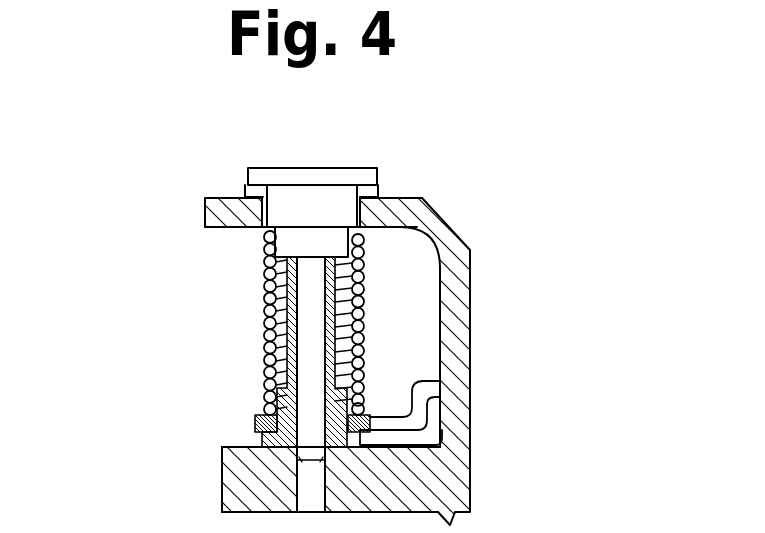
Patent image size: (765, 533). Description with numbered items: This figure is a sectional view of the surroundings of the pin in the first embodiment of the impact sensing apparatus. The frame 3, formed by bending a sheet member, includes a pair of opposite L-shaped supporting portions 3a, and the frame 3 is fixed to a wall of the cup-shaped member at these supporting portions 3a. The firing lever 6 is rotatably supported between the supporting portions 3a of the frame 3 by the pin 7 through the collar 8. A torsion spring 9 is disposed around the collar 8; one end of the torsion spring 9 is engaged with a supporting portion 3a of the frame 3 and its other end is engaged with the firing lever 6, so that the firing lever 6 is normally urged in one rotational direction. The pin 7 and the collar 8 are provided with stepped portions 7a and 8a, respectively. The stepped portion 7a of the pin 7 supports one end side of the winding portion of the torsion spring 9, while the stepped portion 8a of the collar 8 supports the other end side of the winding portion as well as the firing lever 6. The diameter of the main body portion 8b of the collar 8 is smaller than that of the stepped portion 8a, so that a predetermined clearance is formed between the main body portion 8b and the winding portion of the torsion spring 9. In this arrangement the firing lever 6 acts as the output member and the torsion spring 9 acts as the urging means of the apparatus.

The frame 3 is at (470, 282).
The supporting portion 3a is at (225, 212).
The firing lever 6 is at (413, 424).
The pin 7 is at (282, 168).
The stepped portion 7a is at (318, 240).
The collar 8 is at (340, 347).
The stepped portion 8a is at (267, 400).
The main body portion 8b is at (285, 336).
The torsion spring 9 is at (270, 298).